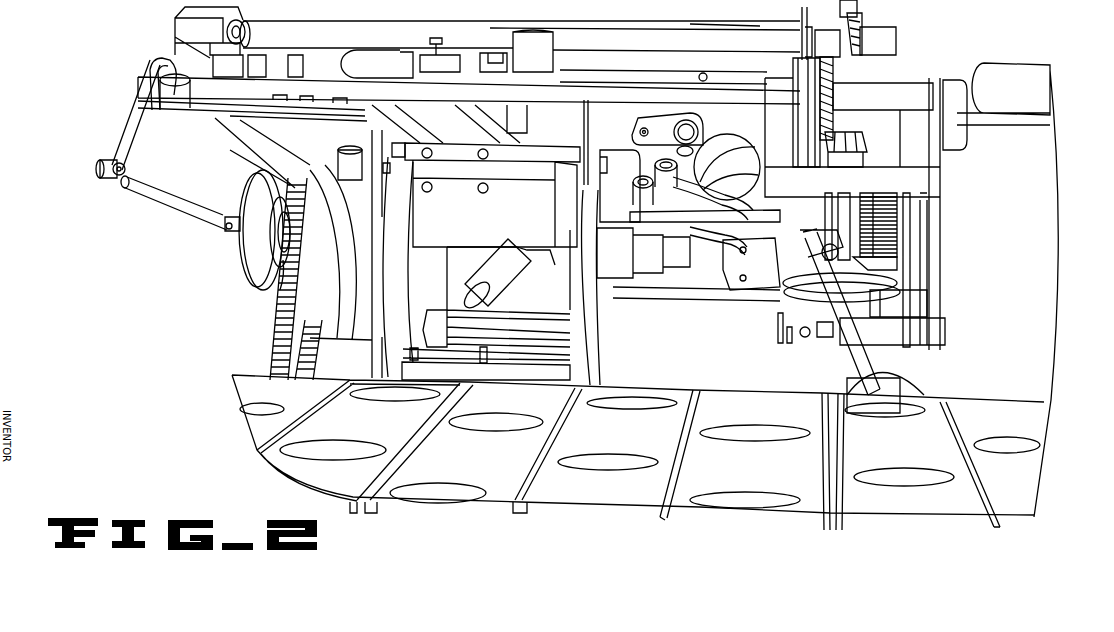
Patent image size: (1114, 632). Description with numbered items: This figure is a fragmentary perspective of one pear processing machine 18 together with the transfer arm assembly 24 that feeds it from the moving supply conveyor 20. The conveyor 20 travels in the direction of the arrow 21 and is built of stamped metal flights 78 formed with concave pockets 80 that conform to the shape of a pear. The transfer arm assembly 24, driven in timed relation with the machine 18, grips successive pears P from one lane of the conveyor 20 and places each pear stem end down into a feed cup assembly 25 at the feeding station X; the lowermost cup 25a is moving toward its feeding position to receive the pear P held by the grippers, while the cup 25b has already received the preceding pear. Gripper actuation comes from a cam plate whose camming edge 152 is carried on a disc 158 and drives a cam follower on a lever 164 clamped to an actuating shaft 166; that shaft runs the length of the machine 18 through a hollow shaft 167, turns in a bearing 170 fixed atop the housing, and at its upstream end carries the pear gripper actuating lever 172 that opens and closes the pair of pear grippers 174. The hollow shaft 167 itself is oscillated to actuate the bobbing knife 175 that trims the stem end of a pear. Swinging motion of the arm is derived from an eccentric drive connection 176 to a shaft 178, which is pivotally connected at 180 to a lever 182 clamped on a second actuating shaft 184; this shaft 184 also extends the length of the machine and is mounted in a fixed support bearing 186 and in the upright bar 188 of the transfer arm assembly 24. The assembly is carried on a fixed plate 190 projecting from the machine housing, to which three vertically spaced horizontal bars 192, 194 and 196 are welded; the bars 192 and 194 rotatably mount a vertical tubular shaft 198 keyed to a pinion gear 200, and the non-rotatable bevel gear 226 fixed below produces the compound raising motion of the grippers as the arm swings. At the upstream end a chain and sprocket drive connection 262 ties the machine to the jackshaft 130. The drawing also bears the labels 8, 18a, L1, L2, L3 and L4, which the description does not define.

The rotary cutting blade 8 is at (858, 8).
The pear processing machine 18 is at (1022, 228).
The housing end portion 18a is at (1054, 74).
The supply conveyor 20 is at (230, 383).
The arrow 21 is at (703, 477).
The transfer arm assembly 24 is at (838, 352).
The feed cup assembly 25 is at (772, 250).
The lowermost feed cup assembly 25a is at (760, 298).
The feed cup 25b is at (737, 180).
The supply conveyor flight 78 is at (478, 503).
The concave pocket 80 is at (450, 420).
The jackshaft 130 is at (320, 38).
The camming edge 152 is at (243, 267).
The disc 158 is at (268, 290).
The lever 164 is at (240, 133).
The actuating shaft 166 is at (397, 58).
The hollow shaft 167 is at (370, 27).
The bearing 170 is at (815, 40).
The pear gripper actuating lever 172 is at (862, 40).
The pear grippers 174 is at (840, 383).
The bobbing knife 175 is at (802, 17).
The eccentric drive connection 176 is at (228, 232).
The shaft 178 is at (165, 200).
The pivotal connection 180 is at (96, 170).
The lever 182 is at (128, 128).
The actuating shaft 184 is at (185, 88).
The fixed support bearing 186 is at (170, 62).
The upright bar 188 is at (783, 80).
The fixed plate 190 is at (942, 157).
The horizontal bar 192 is at (918, 108).
The horizontal bar 194 is at (920, 190).
The horizontal bar 196 is at (920, 328).
The tubular shaft 198 is at (856, 67).
The pinion gear 200 is at (883, 133).
The bevel gear 226 is at (897, 290).
The chain and sprocket drive connection 262 is at (725, 13).
The pear P is at (732, 139).
The feeding station X is at (668, 322).
The lane 1 L1 is at (972, 410).
The lane 2 L2 is at (556, 425).
The lane 3 L3 is at (995, 484).
The lane 4 L4 is at (832, 503).